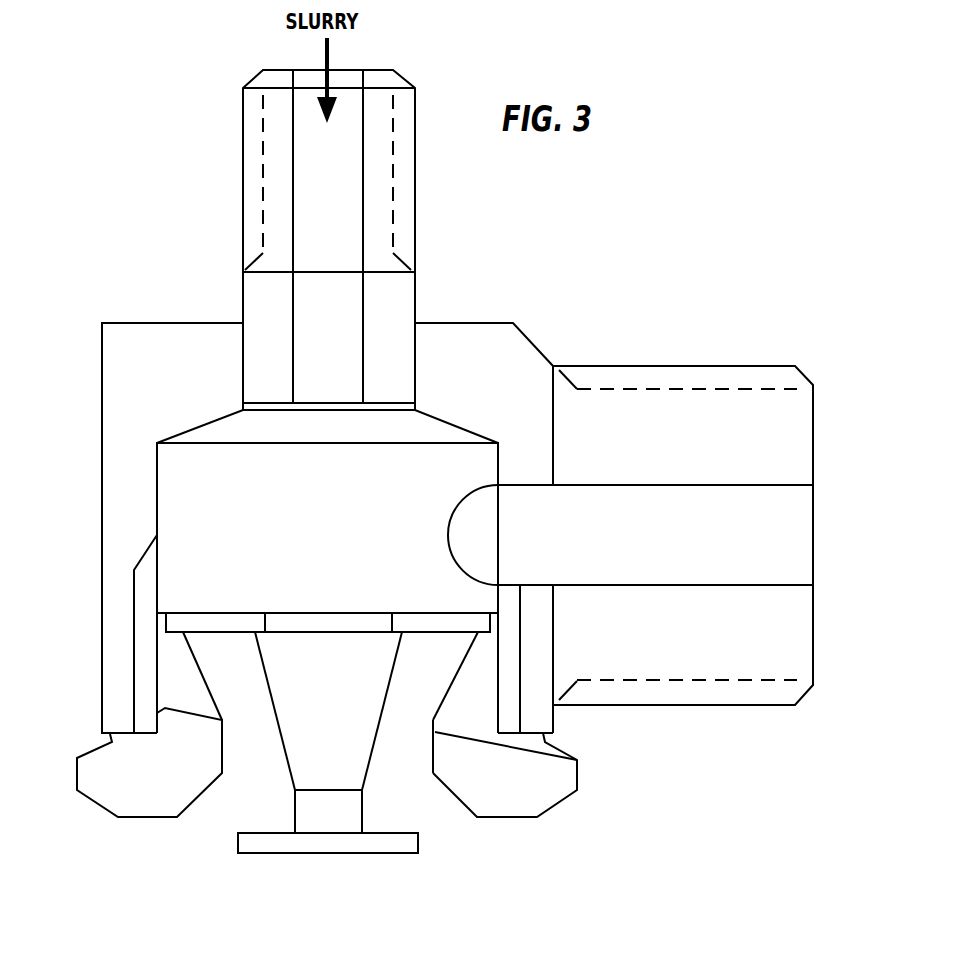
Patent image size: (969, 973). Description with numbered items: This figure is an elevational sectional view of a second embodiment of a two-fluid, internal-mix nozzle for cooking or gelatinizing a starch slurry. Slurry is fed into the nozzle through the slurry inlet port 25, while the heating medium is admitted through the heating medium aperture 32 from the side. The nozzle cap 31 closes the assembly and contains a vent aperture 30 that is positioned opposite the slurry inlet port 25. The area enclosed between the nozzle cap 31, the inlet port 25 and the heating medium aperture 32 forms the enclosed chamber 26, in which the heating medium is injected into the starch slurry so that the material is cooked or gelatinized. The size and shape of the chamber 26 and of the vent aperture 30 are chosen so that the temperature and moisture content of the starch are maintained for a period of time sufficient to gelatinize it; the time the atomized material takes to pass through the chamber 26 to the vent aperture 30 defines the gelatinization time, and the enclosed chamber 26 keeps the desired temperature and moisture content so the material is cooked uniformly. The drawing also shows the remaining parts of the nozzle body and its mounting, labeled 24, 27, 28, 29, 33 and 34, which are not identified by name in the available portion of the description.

The spray nozzle housing 24 is at (553, 320).
The slurry inlet port 25 is at (322, 400).
The enclosed chamber 26 is at (203, 460).
The heating chamber 27 is at (190, 502).
The outer jacket wall 28 is at (102, 540).
The nozzle outlet base 29 is at (316, 855).
The vent aperture 30 is at (455, 810).
The nozzle cap 31 is at (565, 800).
The heating medium aperture 32 is at (758, 535).
The clamp 33 is at (238, 752).
The flange plate 34 is at (252, 608).